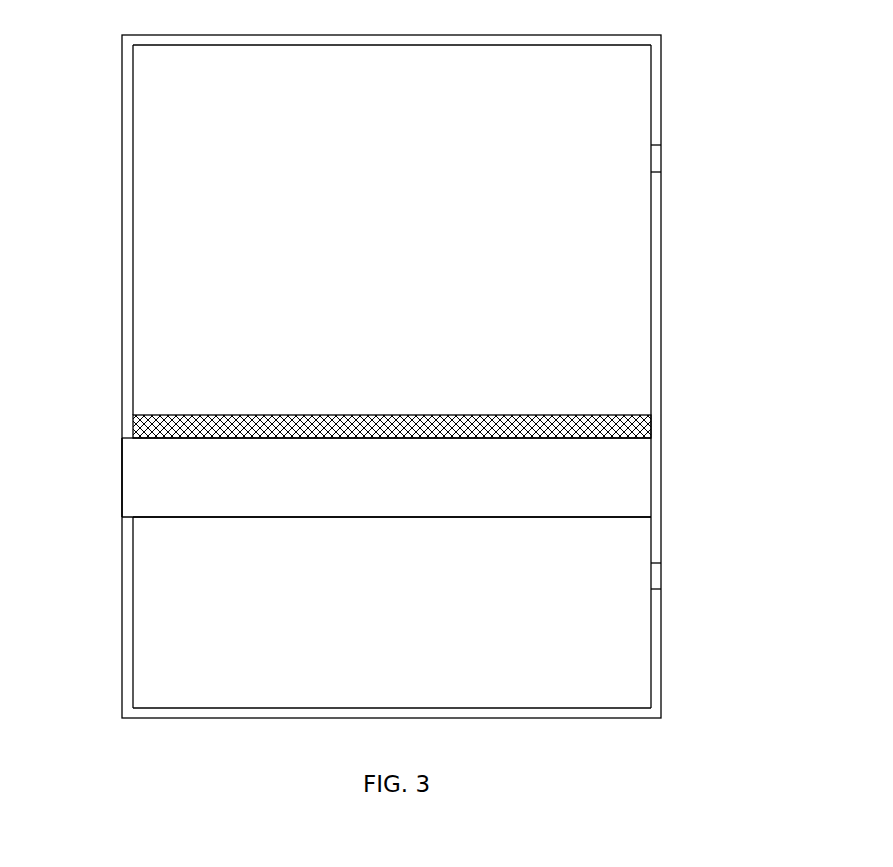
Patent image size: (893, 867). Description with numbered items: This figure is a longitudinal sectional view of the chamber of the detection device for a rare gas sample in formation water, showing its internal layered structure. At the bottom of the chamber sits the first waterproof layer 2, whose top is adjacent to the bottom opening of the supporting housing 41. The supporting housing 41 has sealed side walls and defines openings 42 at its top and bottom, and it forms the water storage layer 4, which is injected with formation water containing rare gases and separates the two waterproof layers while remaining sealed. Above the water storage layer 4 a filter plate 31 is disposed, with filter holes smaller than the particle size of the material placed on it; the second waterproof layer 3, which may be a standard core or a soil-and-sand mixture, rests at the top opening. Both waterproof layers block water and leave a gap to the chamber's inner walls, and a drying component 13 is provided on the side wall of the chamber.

The first waterproof layer 2 is at (153, 648).
The second waterproof layer 3 is at (155, 197).
The water storage layer 4 is at (218, 480).
The drying component 13 is at (660, 158).
The filter plate 31 is at (283, 415).
The supporting housing 41 is at (132, 503).
The openings 42 is at (363, 437).